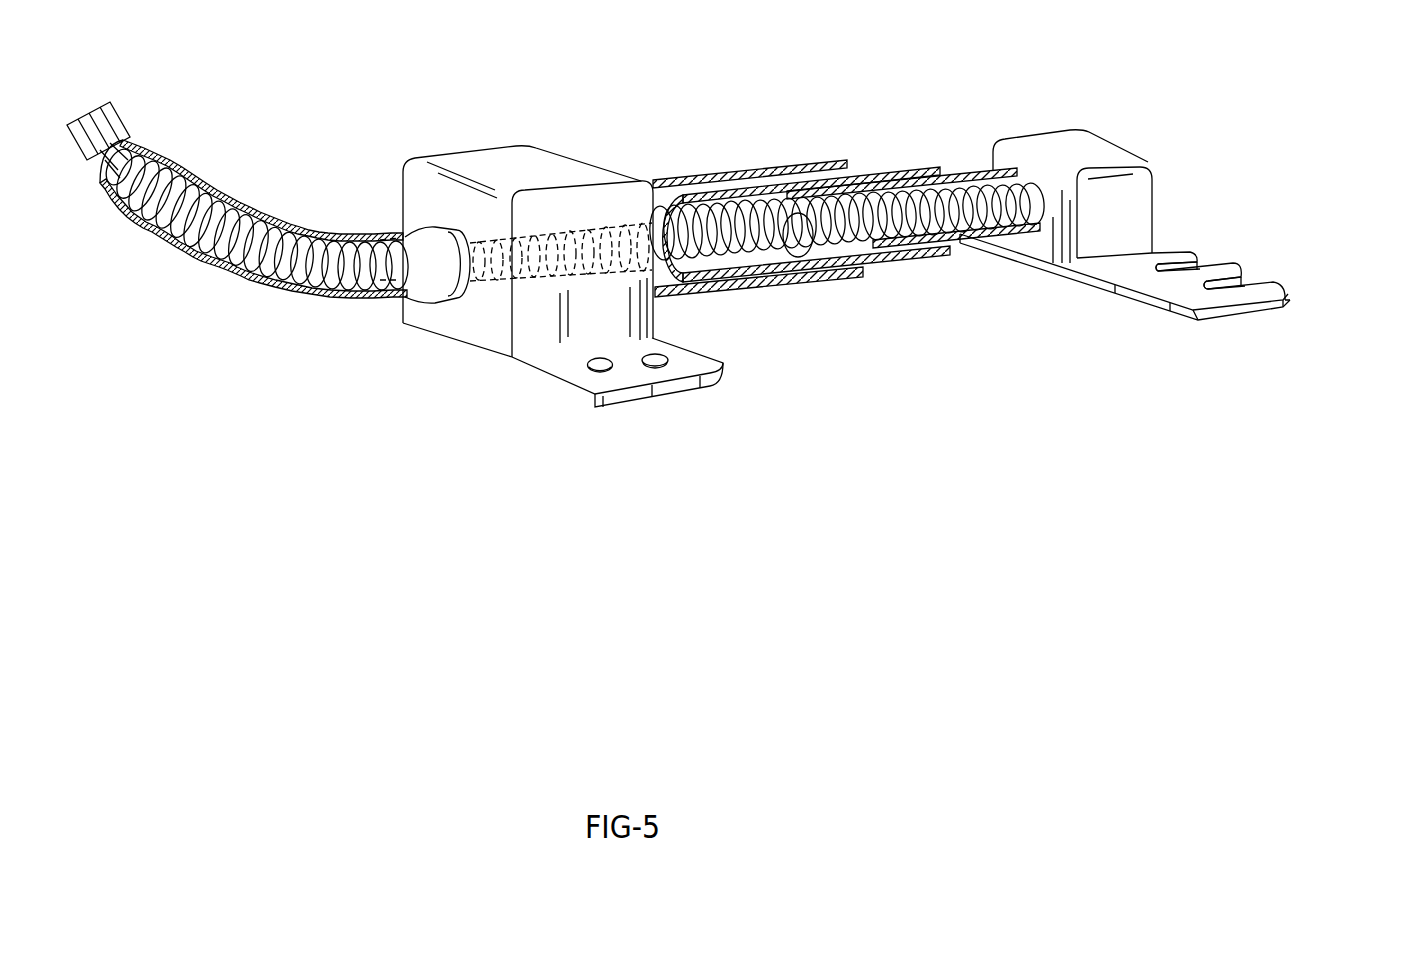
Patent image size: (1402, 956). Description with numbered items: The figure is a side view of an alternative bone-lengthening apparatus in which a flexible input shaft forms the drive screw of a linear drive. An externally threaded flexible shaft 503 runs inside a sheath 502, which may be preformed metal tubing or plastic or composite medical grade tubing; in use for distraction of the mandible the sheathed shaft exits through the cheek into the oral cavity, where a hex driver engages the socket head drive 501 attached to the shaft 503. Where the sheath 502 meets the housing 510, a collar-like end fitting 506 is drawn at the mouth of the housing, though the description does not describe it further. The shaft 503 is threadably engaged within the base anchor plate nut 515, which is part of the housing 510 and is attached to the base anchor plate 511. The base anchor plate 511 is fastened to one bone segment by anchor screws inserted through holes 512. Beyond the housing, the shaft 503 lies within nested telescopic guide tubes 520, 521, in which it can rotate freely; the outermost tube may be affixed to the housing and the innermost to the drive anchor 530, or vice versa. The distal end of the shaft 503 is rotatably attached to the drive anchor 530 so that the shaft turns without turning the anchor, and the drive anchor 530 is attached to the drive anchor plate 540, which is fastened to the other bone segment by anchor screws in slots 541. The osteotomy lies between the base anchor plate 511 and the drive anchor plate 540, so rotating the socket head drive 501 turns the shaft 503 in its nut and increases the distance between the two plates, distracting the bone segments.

The socket head drive 501 is at (112, 120).
The sheath 502 is at (183, 170).
The externally threaded flexible shaft 503 is at (280, 247).
The ferrule 506 is at (442, 290).
The housing 510 is at (553, 165).
The base anchor plate 511 is at (585, 393).
The holes 512 is at (608, 372).
The base anchor plate nut 515 is at (547, 268).
The nested telescopic guide tube 520 is at (777, 287).
The nested telescopic guide tube 521 is at (900, 253).
The drive anchor 530 is at (1142, 192).
The drive anchor plate 540 is at (1200, 297).
The slots 541 is at (1203, 260).